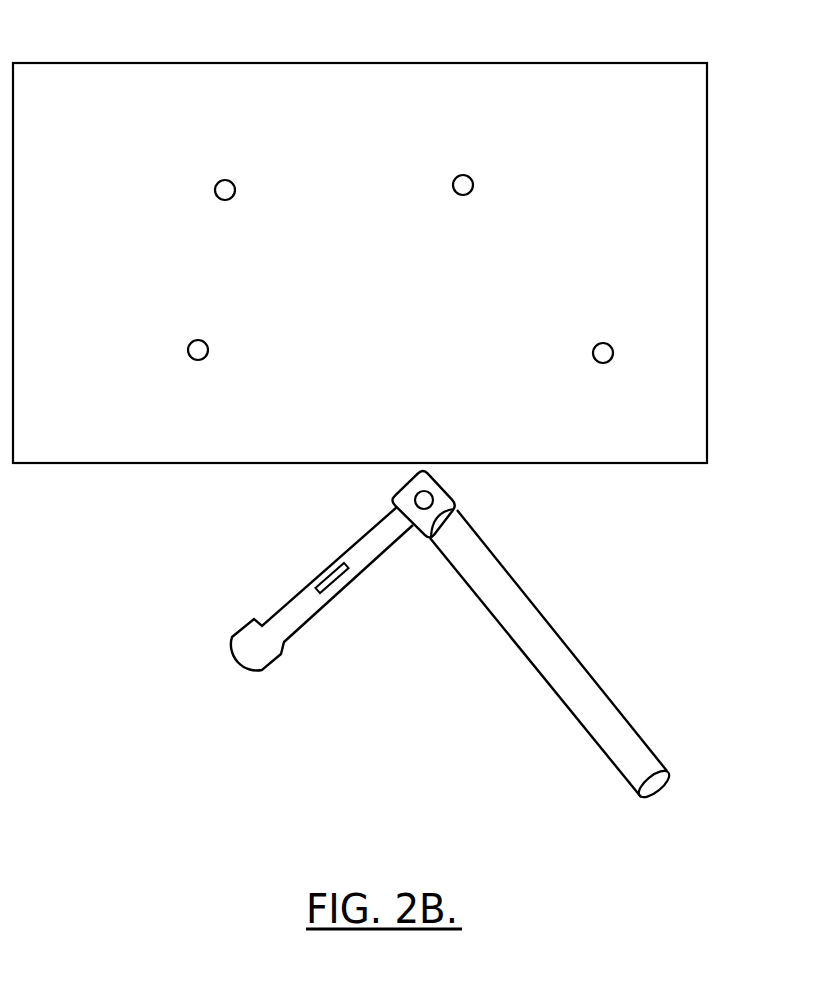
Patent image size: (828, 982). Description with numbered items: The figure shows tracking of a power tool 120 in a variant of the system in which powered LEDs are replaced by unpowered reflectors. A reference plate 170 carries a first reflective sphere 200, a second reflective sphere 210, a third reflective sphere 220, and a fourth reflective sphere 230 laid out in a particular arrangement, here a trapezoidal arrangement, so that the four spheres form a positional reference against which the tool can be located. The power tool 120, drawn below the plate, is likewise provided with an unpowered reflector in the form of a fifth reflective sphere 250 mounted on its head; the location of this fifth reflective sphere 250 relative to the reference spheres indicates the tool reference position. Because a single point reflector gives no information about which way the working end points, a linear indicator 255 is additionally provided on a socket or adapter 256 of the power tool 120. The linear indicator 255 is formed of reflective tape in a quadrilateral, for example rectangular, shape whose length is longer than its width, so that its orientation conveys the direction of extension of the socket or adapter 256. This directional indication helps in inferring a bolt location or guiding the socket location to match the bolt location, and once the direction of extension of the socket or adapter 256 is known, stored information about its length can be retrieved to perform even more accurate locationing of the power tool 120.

The reference plate 170 is at (135, 67).
The first reflective sphere 200 is at (217, 183).
The second reflective sphere 210 is at (190, 343).
The third reflective sphere 220 is at (593, 347).
The fourth reflective sphere 230 is at (471, 182).
The fifth reflective sphere 250 is at (414, 497).
The linear indicator 255 is at (330, 570).
The socket or adapter 256 is at (287, 613).
The power tool 120 is at (502, 573).